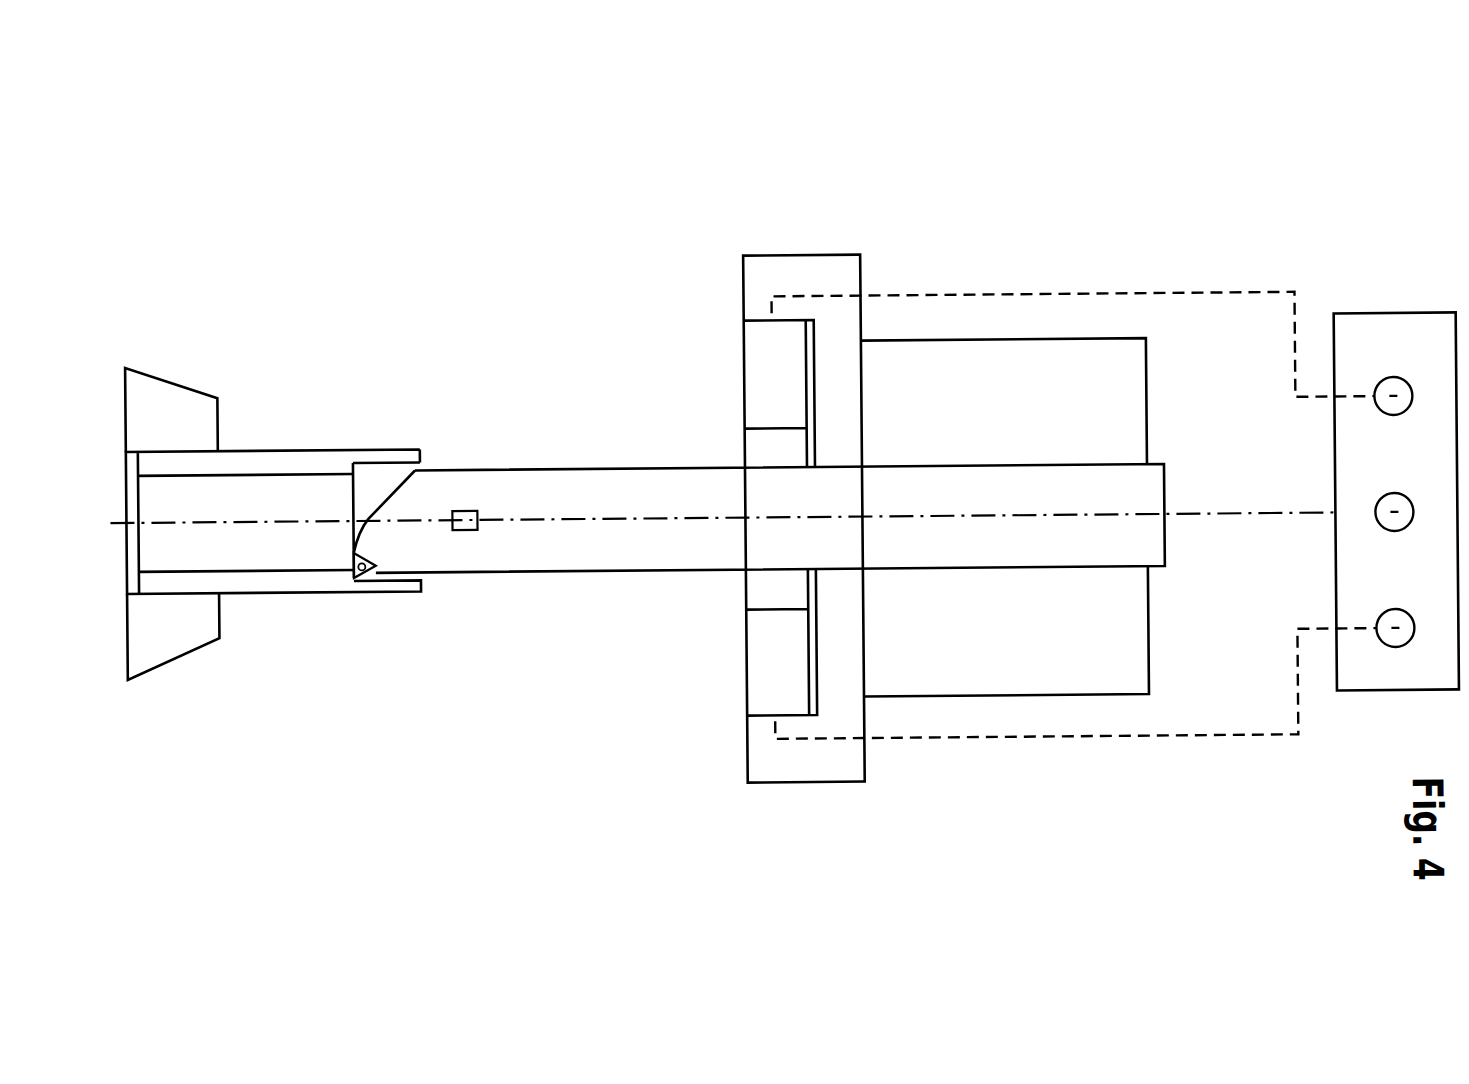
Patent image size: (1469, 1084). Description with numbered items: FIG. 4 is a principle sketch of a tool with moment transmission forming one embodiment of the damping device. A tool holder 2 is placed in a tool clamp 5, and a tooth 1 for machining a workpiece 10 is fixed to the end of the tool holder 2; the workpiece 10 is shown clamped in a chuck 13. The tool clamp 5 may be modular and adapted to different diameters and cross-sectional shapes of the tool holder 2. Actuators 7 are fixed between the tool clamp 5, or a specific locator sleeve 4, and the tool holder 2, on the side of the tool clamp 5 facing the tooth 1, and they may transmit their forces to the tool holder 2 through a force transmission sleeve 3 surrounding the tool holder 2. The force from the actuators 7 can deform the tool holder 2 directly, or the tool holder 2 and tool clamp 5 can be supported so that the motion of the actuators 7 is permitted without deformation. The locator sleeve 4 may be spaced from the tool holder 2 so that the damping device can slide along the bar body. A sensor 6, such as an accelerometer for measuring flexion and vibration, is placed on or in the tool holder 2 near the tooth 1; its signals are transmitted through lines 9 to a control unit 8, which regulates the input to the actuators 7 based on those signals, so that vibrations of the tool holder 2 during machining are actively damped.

The tooth 1 is at (362, 576).
The tool holder 2 is at (465, 487).
The force transmission sleeve 3 is at (772, 450).
The locator sleeve 4 is at (838, 360).
The tool clamp 5 is at (977, 384).
The sensor 6 is at (464, 522).
The actuators 7 is at (773, 657).
The control unit 8 is at (1360, 668).
The lines 9 is at (1246, 300).
The workpiece 10 is at (258, 458).
The chuck 13 is at (162, 409).